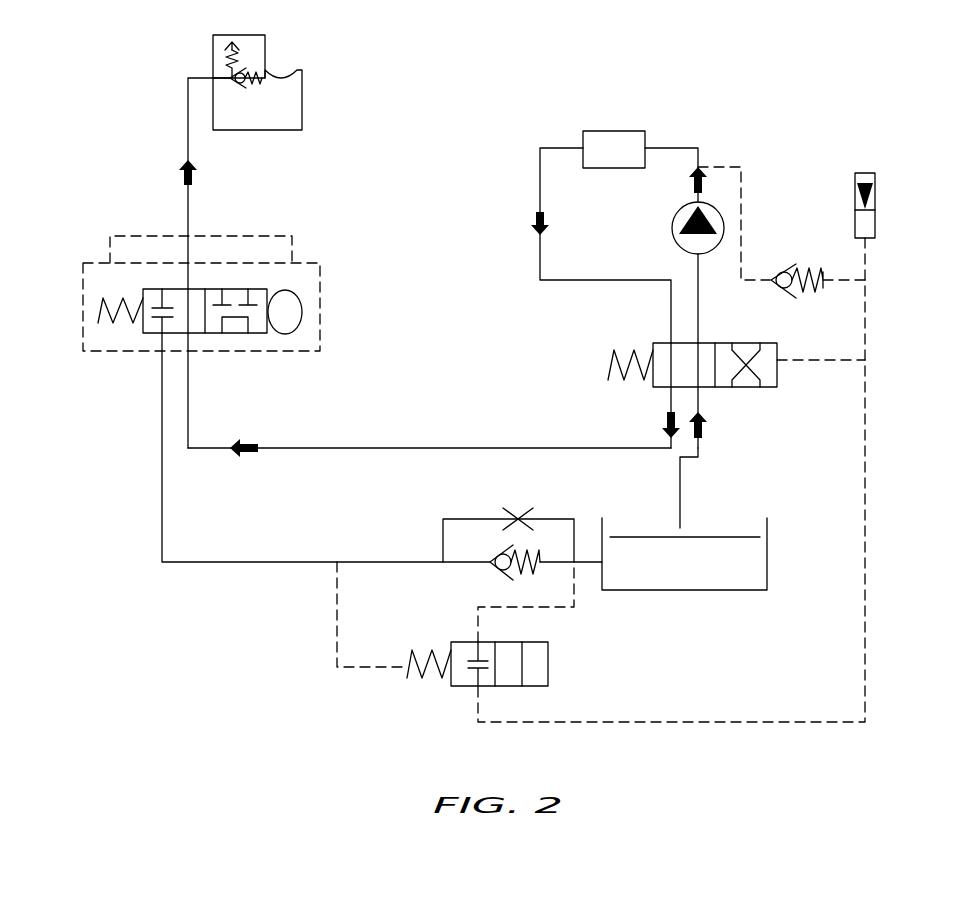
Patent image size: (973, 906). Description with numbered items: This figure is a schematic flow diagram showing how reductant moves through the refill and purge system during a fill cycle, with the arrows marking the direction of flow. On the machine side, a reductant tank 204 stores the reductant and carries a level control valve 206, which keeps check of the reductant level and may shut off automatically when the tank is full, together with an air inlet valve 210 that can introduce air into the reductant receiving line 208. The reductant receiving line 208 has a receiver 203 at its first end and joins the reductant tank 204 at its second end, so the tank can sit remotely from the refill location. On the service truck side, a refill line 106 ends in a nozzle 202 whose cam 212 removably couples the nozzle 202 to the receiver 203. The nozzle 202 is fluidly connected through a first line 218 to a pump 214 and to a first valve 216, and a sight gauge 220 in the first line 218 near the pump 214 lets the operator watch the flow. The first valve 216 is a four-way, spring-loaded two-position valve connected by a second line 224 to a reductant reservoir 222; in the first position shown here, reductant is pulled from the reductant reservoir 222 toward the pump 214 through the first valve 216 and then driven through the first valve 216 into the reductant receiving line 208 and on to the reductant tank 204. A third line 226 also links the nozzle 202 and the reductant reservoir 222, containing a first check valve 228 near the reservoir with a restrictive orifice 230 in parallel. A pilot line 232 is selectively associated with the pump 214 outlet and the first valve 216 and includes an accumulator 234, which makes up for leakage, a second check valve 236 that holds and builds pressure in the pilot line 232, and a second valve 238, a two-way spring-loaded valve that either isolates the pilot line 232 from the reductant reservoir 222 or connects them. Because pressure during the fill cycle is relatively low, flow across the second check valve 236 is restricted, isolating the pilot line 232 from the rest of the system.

The refill line 106 is at (208, 410).
The nozzle 202 is at (83, 306).
The receiver 203 is at (110, 245).
The reductant tank 204 is at (305, 100).
The level control valve 206 is at (258, 76).
The reductant receiving line 208 is at (186, 117).
The air inlet valve 210 is at (236, 36).
The cam 212 is at (303, 307).
The pump 214 is at (681, 212).
The first valve 216 is at (745, 388).
The first line 218 is at (442, 447).
The sight gauge 220 is at (614, 237).
The reductant reservoir 222 is at (770, 555).
The second line 224 is at (683, 490).
The third line 226 is at (214, 560).
The first check valve 228 is at (504, 577).
The restrictive orifice 230 is at (530, 500).
The pilot line 232 is at (883, 355).
The accumulator 234 is at (865, 173).
The second check valve 236 is at (791, 266).
The second valve 238 is at (550, 663).